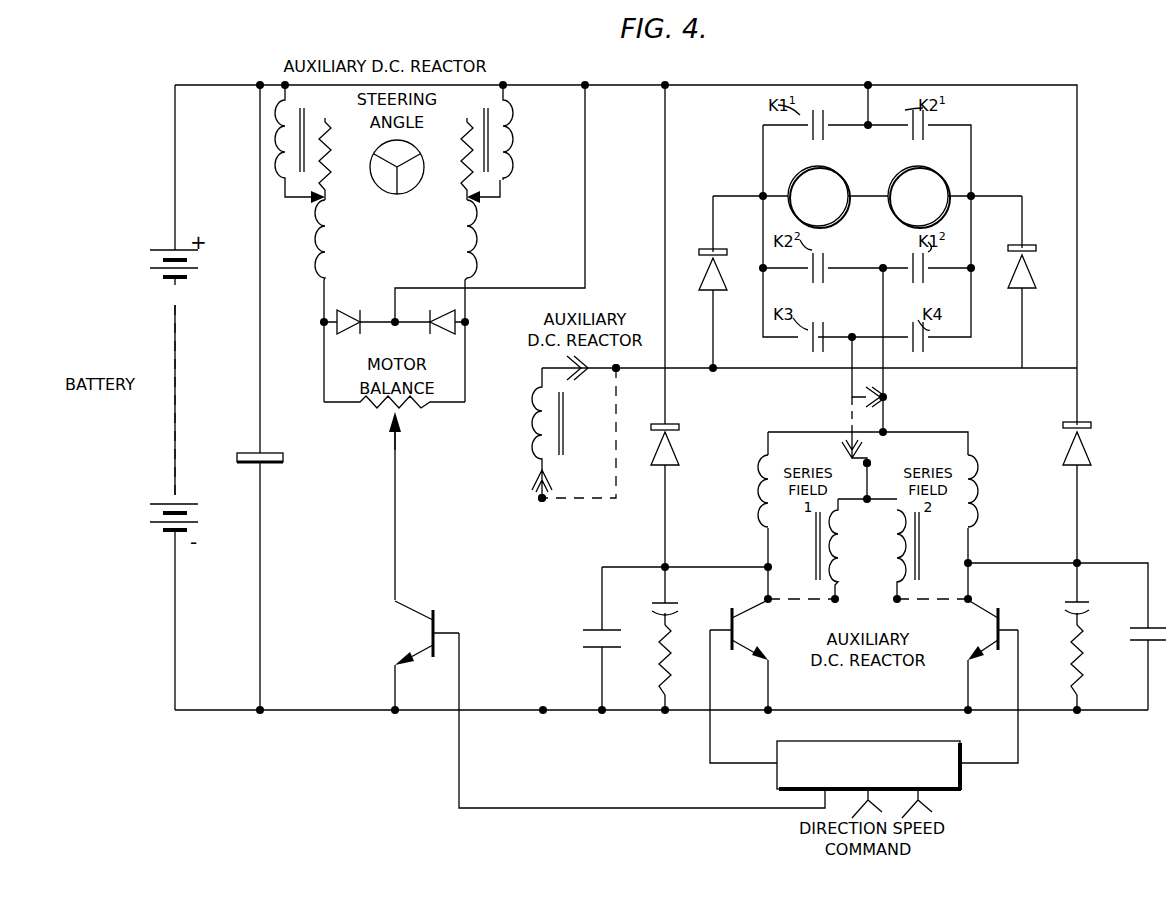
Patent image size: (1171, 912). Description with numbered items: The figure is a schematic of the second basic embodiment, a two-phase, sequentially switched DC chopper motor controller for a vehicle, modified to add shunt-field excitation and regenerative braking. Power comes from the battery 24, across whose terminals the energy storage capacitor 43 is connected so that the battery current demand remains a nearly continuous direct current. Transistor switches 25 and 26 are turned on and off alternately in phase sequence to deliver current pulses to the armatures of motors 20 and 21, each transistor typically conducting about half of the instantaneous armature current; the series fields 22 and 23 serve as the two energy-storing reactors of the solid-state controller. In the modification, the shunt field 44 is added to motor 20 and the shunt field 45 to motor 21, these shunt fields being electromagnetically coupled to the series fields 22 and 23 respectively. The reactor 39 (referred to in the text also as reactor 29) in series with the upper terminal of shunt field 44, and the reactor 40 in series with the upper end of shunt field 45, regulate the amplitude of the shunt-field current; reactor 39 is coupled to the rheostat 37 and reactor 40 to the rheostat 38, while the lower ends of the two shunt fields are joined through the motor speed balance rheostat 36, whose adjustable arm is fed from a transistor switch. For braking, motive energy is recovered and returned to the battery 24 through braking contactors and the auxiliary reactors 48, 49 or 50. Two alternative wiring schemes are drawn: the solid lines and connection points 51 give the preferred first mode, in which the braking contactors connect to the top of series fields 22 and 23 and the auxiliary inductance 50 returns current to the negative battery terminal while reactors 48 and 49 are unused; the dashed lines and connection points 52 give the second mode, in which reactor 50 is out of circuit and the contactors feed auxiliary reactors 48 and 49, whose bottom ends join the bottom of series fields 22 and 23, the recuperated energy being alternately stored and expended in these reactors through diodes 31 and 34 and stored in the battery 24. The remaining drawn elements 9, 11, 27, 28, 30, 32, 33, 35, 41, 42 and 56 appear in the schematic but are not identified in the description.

The diode 9 is at (706, 290).
The diode 11 is at (1030, 290).
The motor 20 is at (808, 170).
The motor 21 is at (930, 172).
The series field winding 22 is at (758, 480).
The series field winding 23 is at (978, 500).
The battery 24 is at (178, 380).
The transistor switch 25 is at (728, 618).
The transistor switch 26 is at (1000, 620).
The controls 27 is at (955, 742).
The capacitor 28 is at (594, 622).
The reactor 29 is at (655, 602).
The resistor 30 is at (656, 652).
The diode 31 is at (680, 432).
The resistor 32 is at (1085, 650).
The capacitor 33 is at (1140, 626).
The diode 34 is at (1060, 432).
The transistor 35 is at (436, 616).
The motor speed balance rheostat 36 is at (365, 410).
The rheostat 37 is at (330, 178).
The rheostat 38 is at (462, 178).
The reactor 39 is at (278, 126).
The reactor 40 is at (510, 125).
The diode 41 is at (365, 314).
The diode 42 is at (458, 330).
The energy storage capacitor 43 is at (258, 465).
The shunt field 44 is at (316, 232).
The shunt field 45 is at (470, 232).
The auxiliary reactor 48 is at (833, 526).
The auxiliary reactor 49 is at (893, 562).
The auxiliary reactor 50 is at (533, 412).
The connection point 51 is at (581, 378).
The connection point 52 is at (619, 372).
The dashed connection 56 is at (613, 468).